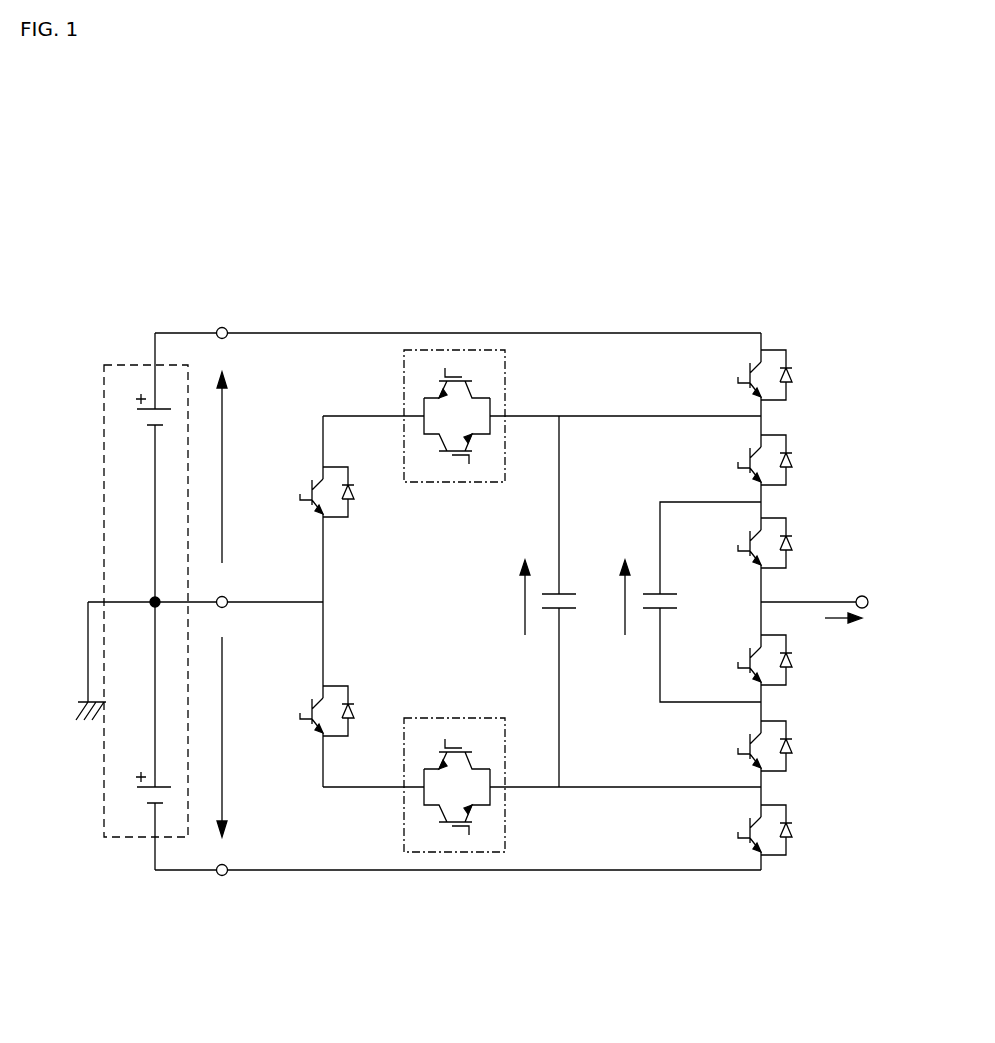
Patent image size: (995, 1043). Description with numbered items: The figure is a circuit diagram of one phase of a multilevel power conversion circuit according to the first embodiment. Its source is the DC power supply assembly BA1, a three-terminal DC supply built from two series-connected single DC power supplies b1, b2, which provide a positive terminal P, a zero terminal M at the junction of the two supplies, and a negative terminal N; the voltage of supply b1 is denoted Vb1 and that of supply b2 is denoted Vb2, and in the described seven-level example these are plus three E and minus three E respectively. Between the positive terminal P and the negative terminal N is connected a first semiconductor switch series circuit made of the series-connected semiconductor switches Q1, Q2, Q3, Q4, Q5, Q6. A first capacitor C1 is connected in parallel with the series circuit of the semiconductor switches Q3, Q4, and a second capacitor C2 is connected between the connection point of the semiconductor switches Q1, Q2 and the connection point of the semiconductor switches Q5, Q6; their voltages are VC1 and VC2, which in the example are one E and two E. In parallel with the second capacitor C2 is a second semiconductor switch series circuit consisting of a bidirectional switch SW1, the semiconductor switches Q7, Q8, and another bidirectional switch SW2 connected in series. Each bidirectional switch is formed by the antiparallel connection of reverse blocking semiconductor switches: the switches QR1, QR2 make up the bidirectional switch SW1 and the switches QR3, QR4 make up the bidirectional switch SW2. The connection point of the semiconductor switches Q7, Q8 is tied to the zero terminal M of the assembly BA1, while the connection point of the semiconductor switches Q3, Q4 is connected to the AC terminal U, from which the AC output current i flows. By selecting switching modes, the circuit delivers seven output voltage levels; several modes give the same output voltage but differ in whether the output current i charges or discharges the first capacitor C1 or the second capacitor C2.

The DC power supply assembly BA1 is at (123, 601).
The single DC power supply b1 is at (145, 483).
The single DC power supply b2 is at (145, 719).
The positive terminal P is at (232, 355).
The zero terminal M is at (232, 616).
The negative terminal N is at (237, 860).
The voltage of single DC power supply b1 Vb1 is at (239, 467).
The voltage of single DC power supply b2 Vb2 is at (239, 737).
The semiconductor switch Q1 is at (785, 375).
The semiconductor switch Q2 is at (785, 460).
The semiconductor switch Q3 is at (785, 543).
The semiconductor switch Q4 is at (785, 660).
The semiconductor switch Q5 is at (785, 746).
The semiconductor switch Q6 is at (785, 830).
The semiconductor switch Q7 is at (331, 507).
The semiconductor switch Q8 is at (331, 698).
The bidirectional switch SW1 is at (454, 431).
The bidirectional switch SW2 is at (454, 774).
The reverse blocking semiconductor switch QR1 is at (457, 378).
The reverse blocking semiconductor switch QR2 is at (451, 440).
The reverse blocking semiconductor switch QR3 is at (457, 748).
The reverse blocking semiconductor switch QR4 is at (451, 810).
The first capacitor C1 is at (702, 602).
The second capacitor C2 is at (568, 601).
The voltage of capacitor C1 VC1 is at (624, 614).
The voltage of capacitor C2 VC2 is at (523, 614).
The AC terminal U is at (824, 595).
The AC output current i is at (843, 631).